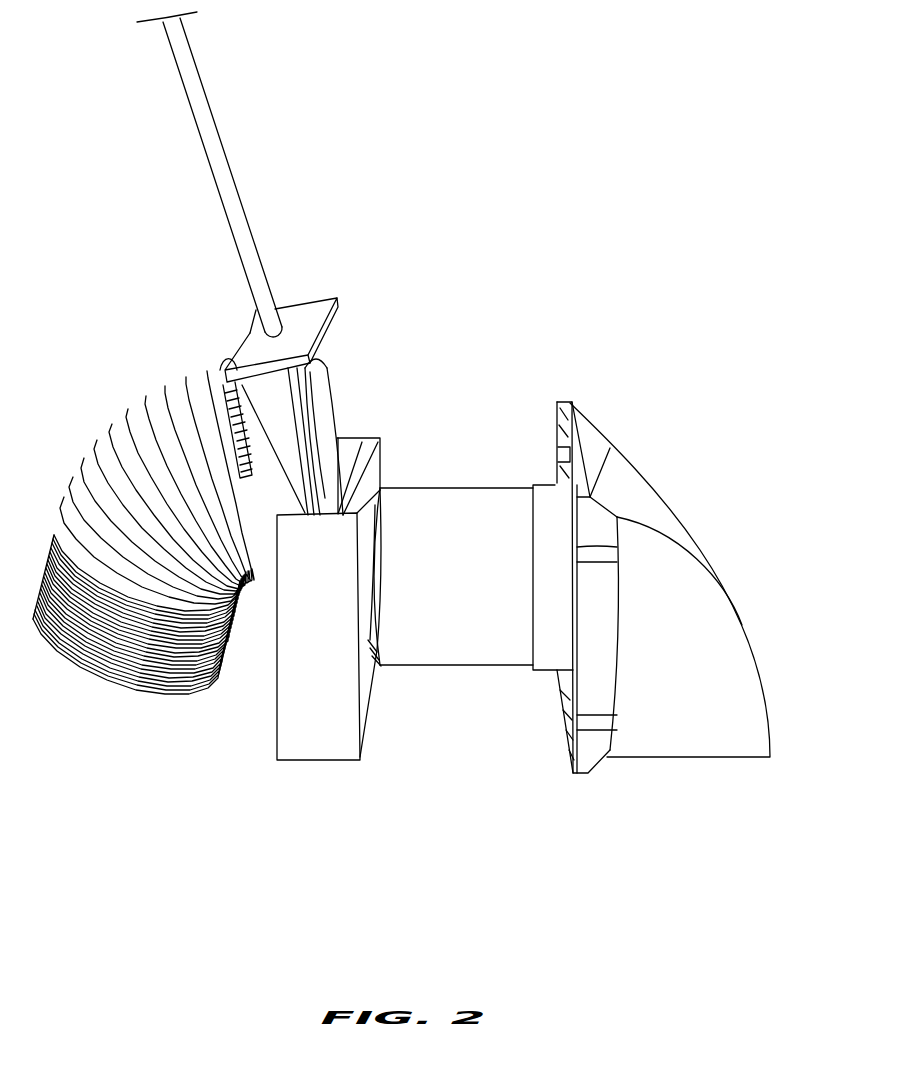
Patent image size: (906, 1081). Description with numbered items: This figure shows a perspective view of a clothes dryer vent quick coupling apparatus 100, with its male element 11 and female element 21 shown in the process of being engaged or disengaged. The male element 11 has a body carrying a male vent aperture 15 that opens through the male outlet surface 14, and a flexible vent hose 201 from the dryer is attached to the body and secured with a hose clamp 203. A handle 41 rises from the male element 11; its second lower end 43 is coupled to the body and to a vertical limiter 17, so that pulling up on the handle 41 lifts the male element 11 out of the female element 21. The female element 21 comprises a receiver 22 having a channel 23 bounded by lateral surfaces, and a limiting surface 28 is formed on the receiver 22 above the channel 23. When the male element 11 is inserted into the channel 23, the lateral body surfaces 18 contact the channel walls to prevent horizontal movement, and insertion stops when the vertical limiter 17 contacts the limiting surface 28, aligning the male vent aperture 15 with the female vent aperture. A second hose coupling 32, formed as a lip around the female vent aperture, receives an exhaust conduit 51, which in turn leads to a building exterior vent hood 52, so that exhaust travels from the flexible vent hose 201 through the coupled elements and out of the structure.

The clothes dryer vent quick coupling apparatus 100 is at (616, 150).
The handle 41 is at (213, 143).
The second lower end 43 is at (283, 296).
The male element 11 is at (235, 312).
The vertical limiter 17 is at (338, 297).
The male outlet surface 14 is at (313, 360).
The male vent aperture 15 is at (318, 403).
The hose clamp 203 is at (233, 405).
The flexible vent hose 201 is at (115, 487).
The female element 21 is at (400, 395).
The limiting surface 28 is at (380, 440).
The channel 23 is at (347, 450).
The lateral body surface 18 is at (350, 649).
The receiver 22 is at (325, 727).
The second hose coupling 32 is at (377, 663).
The exhaust conduit 51 is at (462, 520).
The building exterior vent hood 52 is at (650, 517).